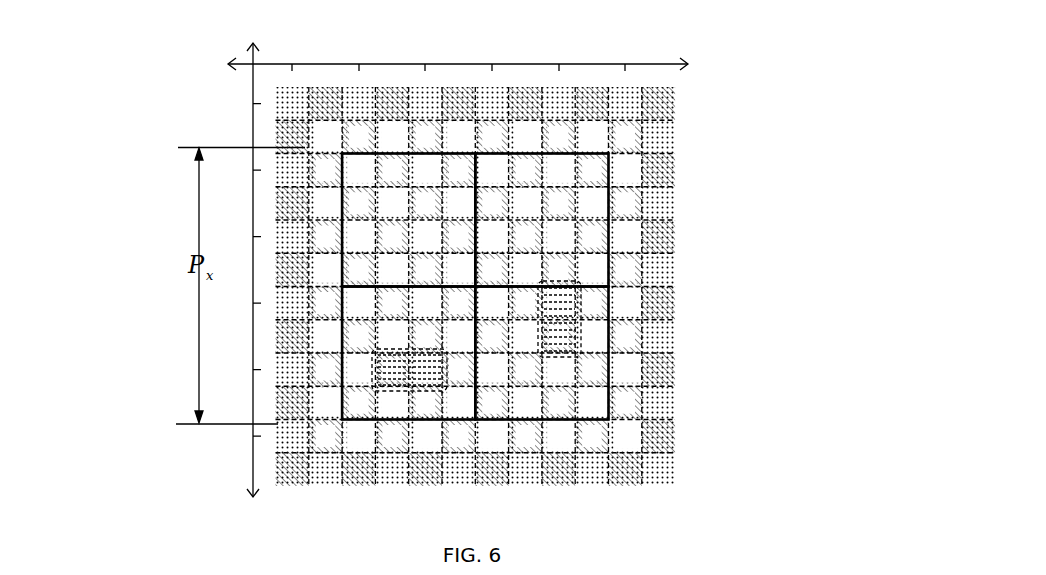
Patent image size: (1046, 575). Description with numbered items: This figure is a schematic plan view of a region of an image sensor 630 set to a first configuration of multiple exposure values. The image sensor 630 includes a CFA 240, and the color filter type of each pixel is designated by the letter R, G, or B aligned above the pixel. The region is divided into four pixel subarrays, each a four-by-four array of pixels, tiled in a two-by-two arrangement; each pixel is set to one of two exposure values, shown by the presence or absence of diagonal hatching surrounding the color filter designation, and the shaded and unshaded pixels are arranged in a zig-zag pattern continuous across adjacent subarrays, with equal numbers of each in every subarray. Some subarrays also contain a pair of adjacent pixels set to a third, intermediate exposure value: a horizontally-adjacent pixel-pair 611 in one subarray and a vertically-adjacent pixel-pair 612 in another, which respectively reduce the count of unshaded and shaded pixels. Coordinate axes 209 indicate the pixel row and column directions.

The coordinate axes 209 is at (243, 54).
The CFA 240 is at (672, 223).
The image sensor 630 is at (612, 284).
The horizontally-adjacent pixel-pair 611 is at (402, 391).
The vertically-adjacent pixel-pair 612 is at (548, 357).